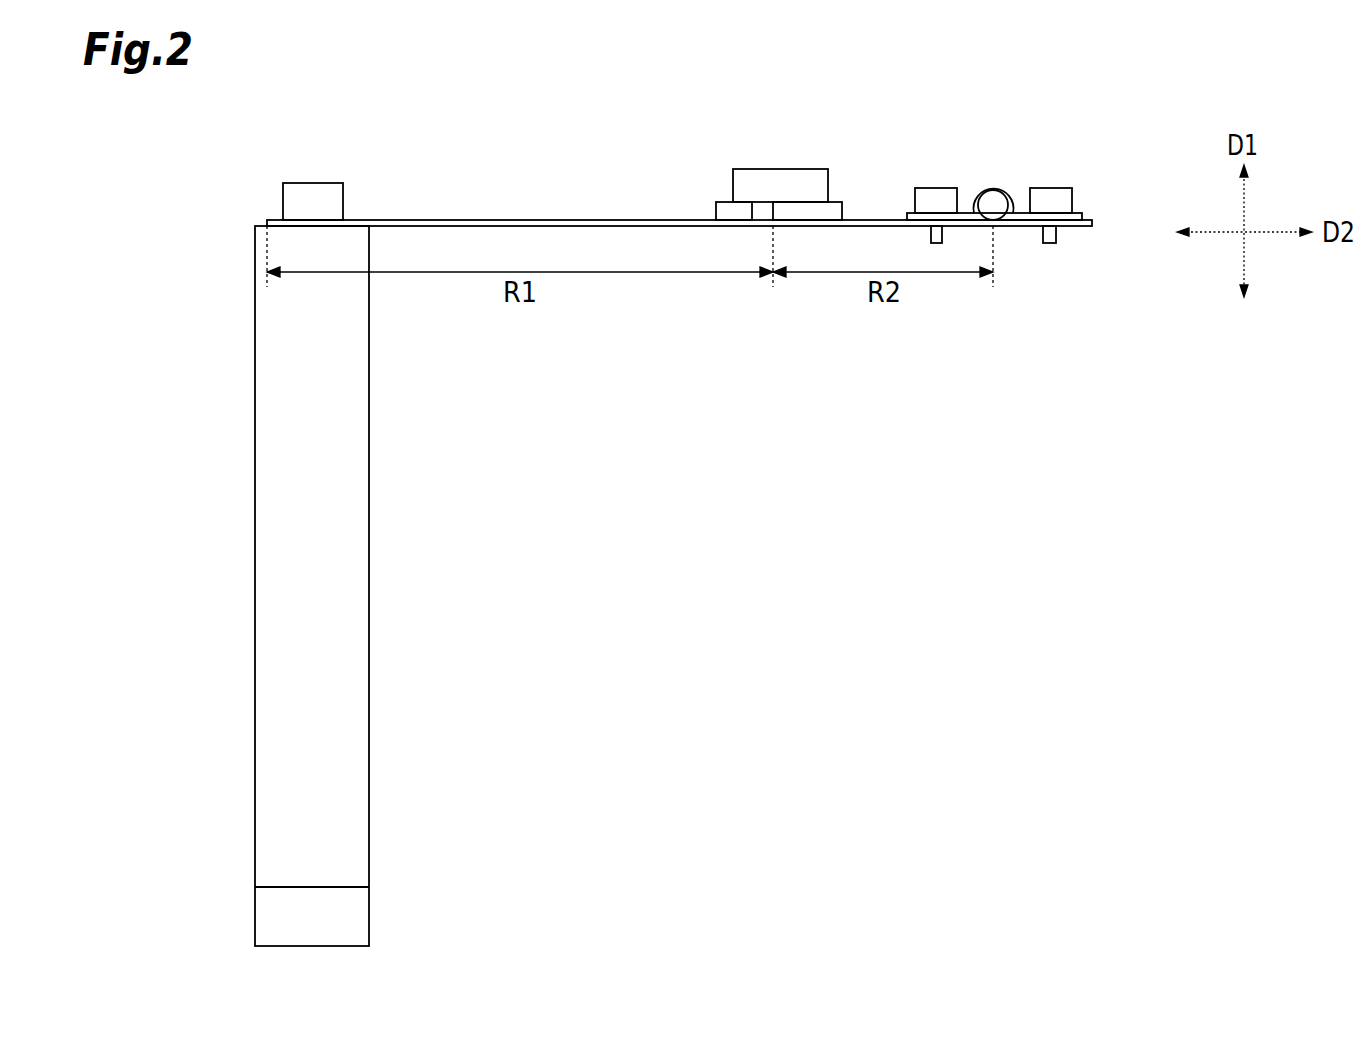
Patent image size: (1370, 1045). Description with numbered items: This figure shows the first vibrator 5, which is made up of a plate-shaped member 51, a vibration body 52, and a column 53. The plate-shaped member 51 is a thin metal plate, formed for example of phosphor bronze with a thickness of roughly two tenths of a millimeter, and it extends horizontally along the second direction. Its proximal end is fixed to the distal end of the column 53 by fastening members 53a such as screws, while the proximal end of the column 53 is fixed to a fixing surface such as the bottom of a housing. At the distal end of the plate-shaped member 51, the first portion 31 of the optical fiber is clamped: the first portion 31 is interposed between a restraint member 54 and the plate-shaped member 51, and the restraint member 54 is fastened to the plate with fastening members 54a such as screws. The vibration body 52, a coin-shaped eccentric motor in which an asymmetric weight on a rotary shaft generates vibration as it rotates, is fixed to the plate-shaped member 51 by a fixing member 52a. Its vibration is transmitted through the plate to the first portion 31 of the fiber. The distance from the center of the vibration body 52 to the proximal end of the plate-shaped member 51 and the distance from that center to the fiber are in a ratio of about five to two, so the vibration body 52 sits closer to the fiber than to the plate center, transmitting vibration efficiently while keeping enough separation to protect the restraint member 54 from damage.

The first vibrator 5 is at (617, 458).
The plate-shaped member 51 is at (562, 220).
The vibration body 52 is at (784, 169).
The fixing member 52a is at (732, 200).
The column 53 is at (369, 713).
The fastening members 53a is at (308, 183).
The restraint member 54 is at (1020, 213).
The fastening members 54a is at (936, 188).
The first portion 31 is at (993, 205).